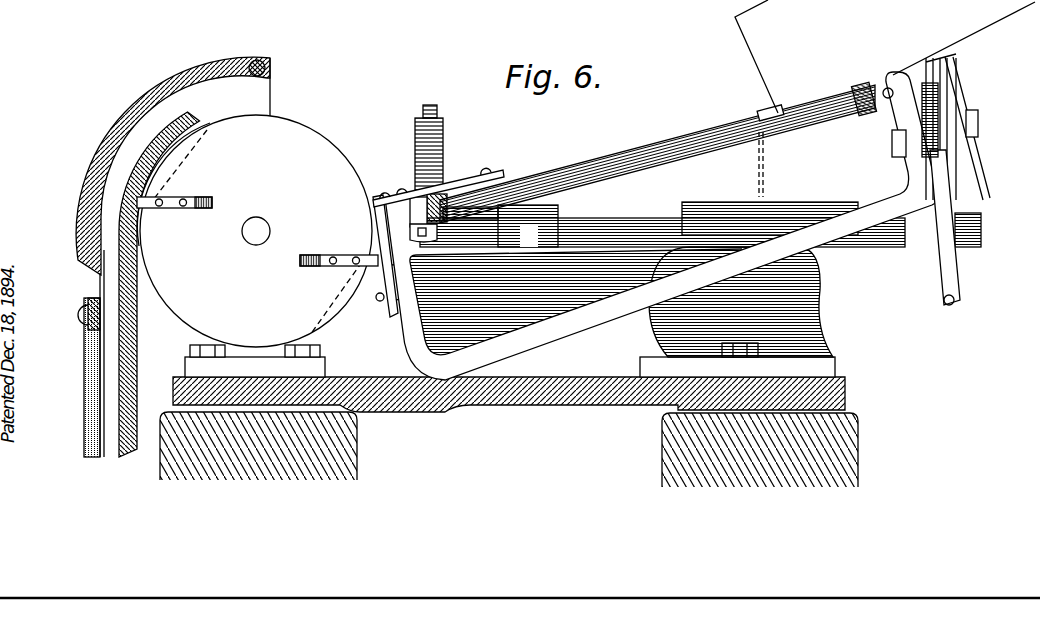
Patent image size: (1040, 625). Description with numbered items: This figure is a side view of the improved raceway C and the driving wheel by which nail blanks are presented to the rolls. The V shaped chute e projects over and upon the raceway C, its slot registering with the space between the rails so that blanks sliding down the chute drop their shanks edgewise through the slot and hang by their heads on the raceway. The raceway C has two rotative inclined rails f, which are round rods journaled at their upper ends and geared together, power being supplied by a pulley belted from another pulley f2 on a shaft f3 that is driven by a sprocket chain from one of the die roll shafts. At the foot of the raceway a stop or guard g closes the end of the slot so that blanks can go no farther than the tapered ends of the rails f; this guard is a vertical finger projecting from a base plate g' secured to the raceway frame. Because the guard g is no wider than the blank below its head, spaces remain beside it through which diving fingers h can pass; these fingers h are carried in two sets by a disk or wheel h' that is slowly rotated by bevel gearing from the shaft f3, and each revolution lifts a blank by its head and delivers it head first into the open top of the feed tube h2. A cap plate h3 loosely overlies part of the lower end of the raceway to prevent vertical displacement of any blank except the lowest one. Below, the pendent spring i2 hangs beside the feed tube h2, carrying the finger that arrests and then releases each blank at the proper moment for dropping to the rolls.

The raceway C is at (662, 226).
The V shaped chute e is at (885, 98).
The rotative inclined rail f is at (713, 140).
The pulley f2 is at (943, 265).
The shaft f3 is at (644, 220).
The stop or guard g is at (365, 256).
The base plate g' is at (386, 300).
The diving fingers h is at (257, 247).
The disk or wheel h' is at (254, 231).
The feed tube h2 is at (152, 164).
The cap plate h3 is at (448, 180).
The pendent spring i2 is at (86, 372).